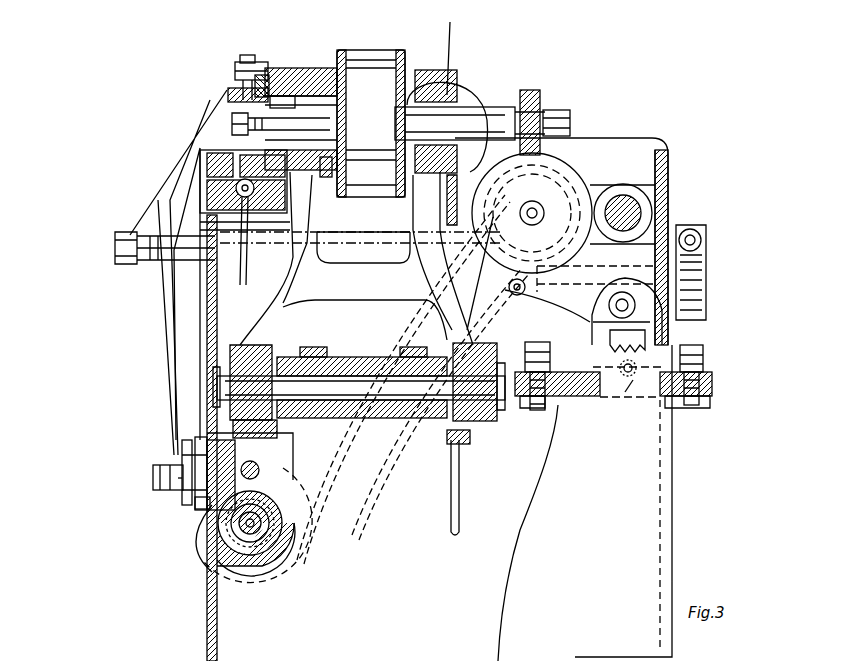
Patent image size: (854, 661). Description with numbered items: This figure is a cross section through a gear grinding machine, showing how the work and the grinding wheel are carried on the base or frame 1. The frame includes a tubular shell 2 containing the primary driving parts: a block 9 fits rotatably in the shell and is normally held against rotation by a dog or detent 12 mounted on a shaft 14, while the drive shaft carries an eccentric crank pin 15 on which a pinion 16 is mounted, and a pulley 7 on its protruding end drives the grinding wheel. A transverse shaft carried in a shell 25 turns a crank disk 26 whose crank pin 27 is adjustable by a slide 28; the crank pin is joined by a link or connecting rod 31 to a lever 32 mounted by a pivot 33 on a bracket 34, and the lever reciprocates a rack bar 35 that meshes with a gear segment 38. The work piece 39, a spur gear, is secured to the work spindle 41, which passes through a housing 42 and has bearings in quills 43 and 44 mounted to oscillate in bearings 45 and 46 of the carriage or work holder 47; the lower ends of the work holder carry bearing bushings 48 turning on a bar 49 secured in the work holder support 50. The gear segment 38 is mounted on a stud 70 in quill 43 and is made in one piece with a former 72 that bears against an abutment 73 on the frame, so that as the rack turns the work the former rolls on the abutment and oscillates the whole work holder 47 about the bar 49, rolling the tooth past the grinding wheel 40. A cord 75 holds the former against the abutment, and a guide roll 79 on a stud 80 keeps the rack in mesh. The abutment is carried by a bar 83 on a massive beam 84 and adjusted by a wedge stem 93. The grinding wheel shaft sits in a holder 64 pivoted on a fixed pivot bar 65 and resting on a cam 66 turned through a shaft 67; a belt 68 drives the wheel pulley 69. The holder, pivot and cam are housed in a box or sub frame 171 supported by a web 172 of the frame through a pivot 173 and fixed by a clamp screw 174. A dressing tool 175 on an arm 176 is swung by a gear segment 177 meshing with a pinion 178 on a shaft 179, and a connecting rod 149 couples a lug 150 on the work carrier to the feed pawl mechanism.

The base or frame 1 is at (656, 492).
The tubular shell 2 is at (283, 490).
The pulley 7 is at (200, 527).
The block 9 is at (268, 512).
The dog or detent 12 is at (302, 468).
The shaft 14 is at (250, 445).
The eccentric crank pin 15 is at (262, 535).
The pinion 16 is at (207, 567).
The shell 25 is at (258, 470).
The crank disk 26 is at (197, 502).
The crank pin 27 is at (153, 477).
The slide 28 is at (178, 481).
The link or connecting rod 31 is at (192, 462).
The lever 32 is at (183, 333).
The pivot 33 is at (130, 240).
The bracket 34 is at (187, 294).
The rack bar 35 is at (268, 72).
The gear segment 38 is at (228, 96).
The work piece 39 is at (542, 95).
The grinding wheel 40 is at (560, 165).
The work spindle 41 is at (465, 118).
The housing 42 is at (372, 58).
The sleeve or quill 43 is at (302, 75).
The sleeve or quill 44 is at (427, 75).
The bearing 45 is at (290, 68).
The bearing 46 is at (445, 95).
The carriage or work holder 47 is at (308, 250).
The bearing bushing 48 is at (248, 345).
The bar 49 is at (395, 398).
The work holder support 50 is at (378, 360).
The holder 64 is at (622, 197).
The fixed pivot bar 65 is at (628, 205).
The cam 66 is at (577, 306).
The shaft 67 is at (690, 230).
The belt 68 is at (412, 379).
The pulley 69 is at (500, 240).
The stud 70 is at (240, 128).
The former 72 is at (212, 180).
The abutment 73 is at (244, 214).
The cord 75 is at (328, 188).
The guide roll 79 is at (243, 57).
The stud 80 is at (233, 70).
The bar 83 is at (280, 188).
The channel bar or beam 84 is at (283, 192).
The stem 93 is at (240, 236).
The connecting rod 149 is at (459, 493).
The lug or arm 150 is at (470, 445).
The box or sub frame 171 is at (668, 178).
The web 172 is at (572, 405).
The pivot 173 is at (548, 365).
The clamp screw 174 is at (703, 368).
The dressing or truing tool 175 is at (509, 289).
The arm 176 is at (570, 280).
The gear segment 177 is at (645, 345).
The pinion 178 is at (622, 378).
The shaft 179 is at (635, 400).